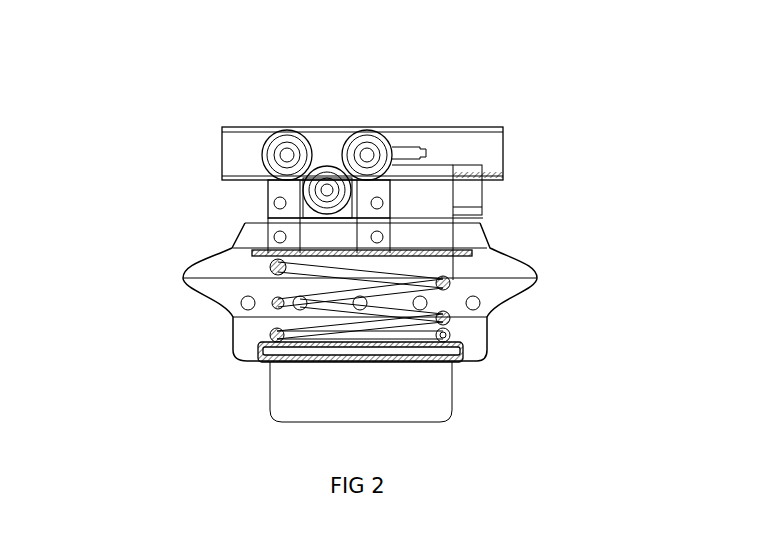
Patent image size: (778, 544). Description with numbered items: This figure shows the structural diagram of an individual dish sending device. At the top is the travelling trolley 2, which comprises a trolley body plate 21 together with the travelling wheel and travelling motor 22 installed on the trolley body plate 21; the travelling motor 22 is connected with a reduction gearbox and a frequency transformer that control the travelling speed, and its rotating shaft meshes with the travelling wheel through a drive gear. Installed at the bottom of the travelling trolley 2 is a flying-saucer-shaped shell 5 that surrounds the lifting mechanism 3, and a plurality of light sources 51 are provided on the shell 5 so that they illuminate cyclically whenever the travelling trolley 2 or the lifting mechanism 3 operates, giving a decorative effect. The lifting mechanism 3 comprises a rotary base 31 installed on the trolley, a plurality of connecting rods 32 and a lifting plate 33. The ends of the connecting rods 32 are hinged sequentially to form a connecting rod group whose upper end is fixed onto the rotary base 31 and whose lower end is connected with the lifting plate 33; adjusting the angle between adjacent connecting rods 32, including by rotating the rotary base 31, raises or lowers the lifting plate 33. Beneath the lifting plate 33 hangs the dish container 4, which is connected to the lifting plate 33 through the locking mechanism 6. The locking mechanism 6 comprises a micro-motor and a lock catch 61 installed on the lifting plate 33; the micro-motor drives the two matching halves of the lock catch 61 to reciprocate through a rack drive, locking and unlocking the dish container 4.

The travelling trolley 2 is at (108, 18).
The trolley body plate 21 is at (240, 158).
The travelling wheel and travelling motor 22 is at (282, 131).
The lifting mechanism 3 is at (610, 182).
The rotary base 31 is at (483, 252).
The connecting rods 32 is at (440, 307).
The lifting plate 33 is at (448, 337).
The dish container 4 is at (333, 403).
The shell 5 is at (200, 255).
The light sources 51 is at (242, 302).
The locking mechanism 6 is at (460, 350).
The lock catch 61 is at (650, 375).